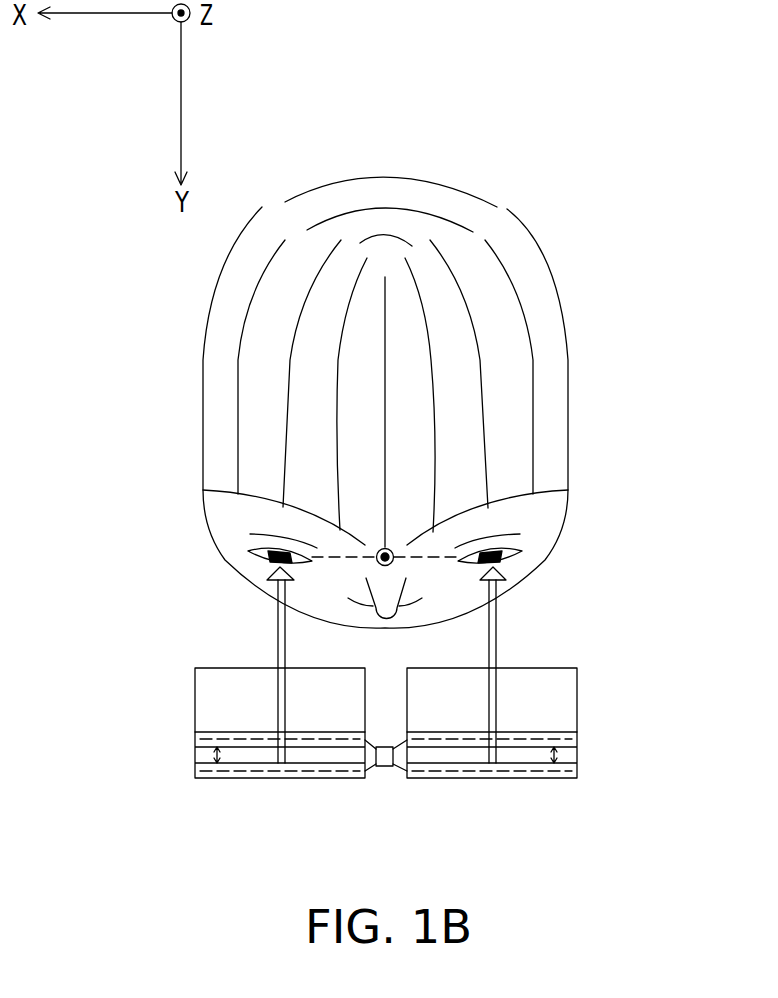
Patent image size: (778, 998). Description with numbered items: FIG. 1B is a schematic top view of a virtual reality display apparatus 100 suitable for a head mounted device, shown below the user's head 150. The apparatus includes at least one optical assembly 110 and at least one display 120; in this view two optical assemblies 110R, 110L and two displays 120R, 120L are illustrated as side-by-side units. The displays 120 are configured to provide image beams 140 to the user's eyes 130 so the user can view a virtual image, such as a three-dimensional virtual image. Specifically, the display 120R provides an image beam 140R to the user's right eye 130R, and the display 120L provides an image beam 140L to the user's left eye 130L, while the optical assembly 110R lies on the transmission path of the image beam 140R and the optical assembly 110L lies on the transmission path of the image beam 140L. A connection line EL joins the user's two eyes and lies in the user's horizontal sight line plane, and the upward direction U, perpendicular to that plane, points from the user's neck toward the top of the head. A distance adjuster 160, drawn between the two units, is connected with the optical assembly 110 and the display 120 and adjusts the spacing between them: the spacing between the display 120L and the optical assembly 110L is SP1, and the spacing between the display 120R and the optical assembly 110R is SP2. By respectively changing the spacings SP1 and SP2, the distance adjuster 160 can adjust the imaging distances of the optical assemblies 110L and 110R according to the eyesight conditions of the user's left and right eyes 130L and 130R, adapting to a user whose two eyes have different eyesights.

The virtual reality display apparatus 100 is at (707, 857).
The optical assembly 110R is at (212, 693).
The optical assembly 110L is at (557, 693).
The optical assembly 110 is at (383, 697).
The display 120R is at (216, 778).
The display 120L is at (556, 778).
The display 120 is at (383, 768).
The user's right eye 130R is at (256, 556).
The user's left eye 130L is at (514, 556).
The user's eyes 130 is at (382, 567).
The image beam 140R is at (278, 640).
The image beam 140L is at (496, 640).
The image beam 140 is at (382, 665).
The user's head 150 is at (446, 184).
The distance adjuster 160 is at (385, 767).
The spacing SP1 is at (560, 752).
The spacing SP2 is at (212, 752).
The upward direction U is at (388, 547).
The connection line EL is at (433, 561).